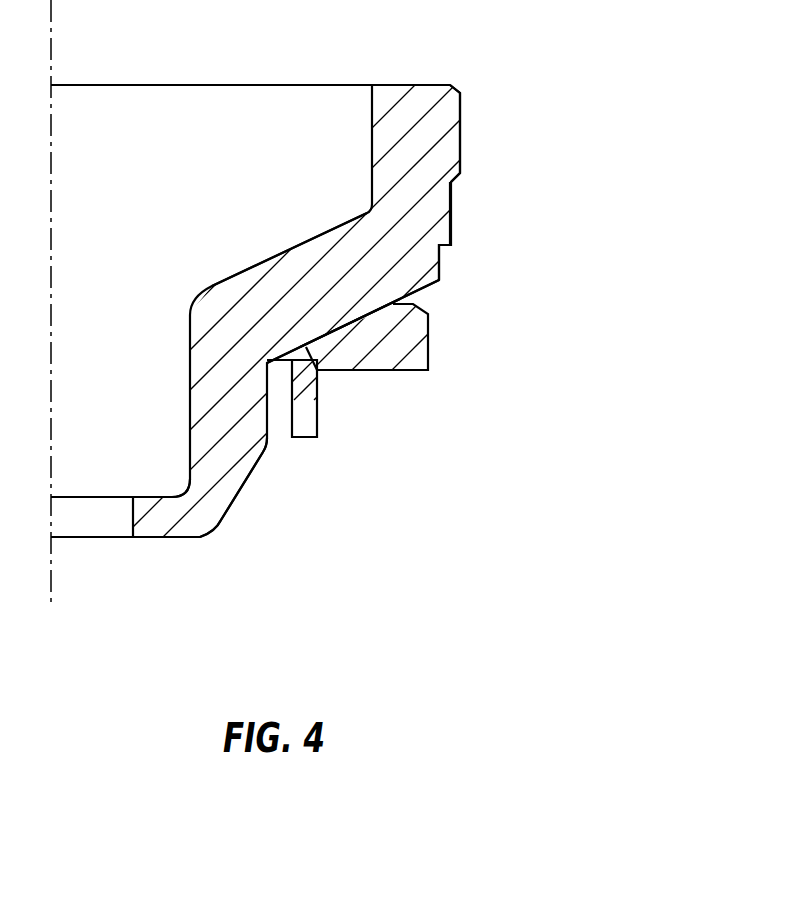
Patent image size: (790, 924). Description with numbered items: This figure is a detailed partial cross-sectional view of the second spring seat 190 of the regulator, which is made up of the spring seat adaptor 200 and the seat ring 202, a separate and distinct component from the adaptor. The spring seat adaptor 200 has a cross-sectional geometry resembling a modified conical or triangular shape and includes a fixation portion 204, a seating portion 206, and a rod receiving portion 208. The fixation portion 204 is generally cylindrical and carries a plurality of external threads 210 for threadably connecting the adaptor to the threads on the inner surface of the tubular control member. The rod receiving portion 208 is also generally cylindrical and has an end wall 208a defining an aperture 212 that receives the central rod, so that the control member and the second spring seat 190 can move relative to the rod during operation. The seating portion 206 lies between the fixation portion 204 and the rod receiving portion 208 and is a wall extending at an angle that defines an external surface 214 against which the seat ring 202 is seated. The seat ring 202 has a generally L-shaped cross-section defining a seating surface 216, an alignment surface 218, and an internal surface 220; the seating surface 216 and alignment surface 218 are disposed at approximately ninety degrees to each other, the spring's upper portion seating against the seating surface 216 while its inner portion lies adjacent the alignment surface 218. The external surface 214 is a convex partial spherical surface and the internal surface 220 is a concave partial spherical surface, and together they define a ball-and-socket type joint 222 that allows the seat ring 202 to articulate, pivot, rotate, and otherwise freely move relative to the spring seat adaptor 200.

The second spring seat 190 is at (176, 82).
The spring seat adaptor 200 is at (385, 107).
The seat ring 202 is at (433, 329).
The fixation portion 204 is at (438, 192).
The seating portion 206 is at (319, 261).
The rod receiving portion 208 is at (250, 486).
The end wall 208a is at (155, 523).
The external threads 210 is at (458, 127).
The aperture 212 is at (75, 523).
The external surface 214 is at (437, 283).
The seating surface 216 is at (412, 371).
The alignment surface 218 is at (318, 423).
The internal surface 220 is at (378, 310).
The ball-and-socket type joint 222 is at (322, 339).